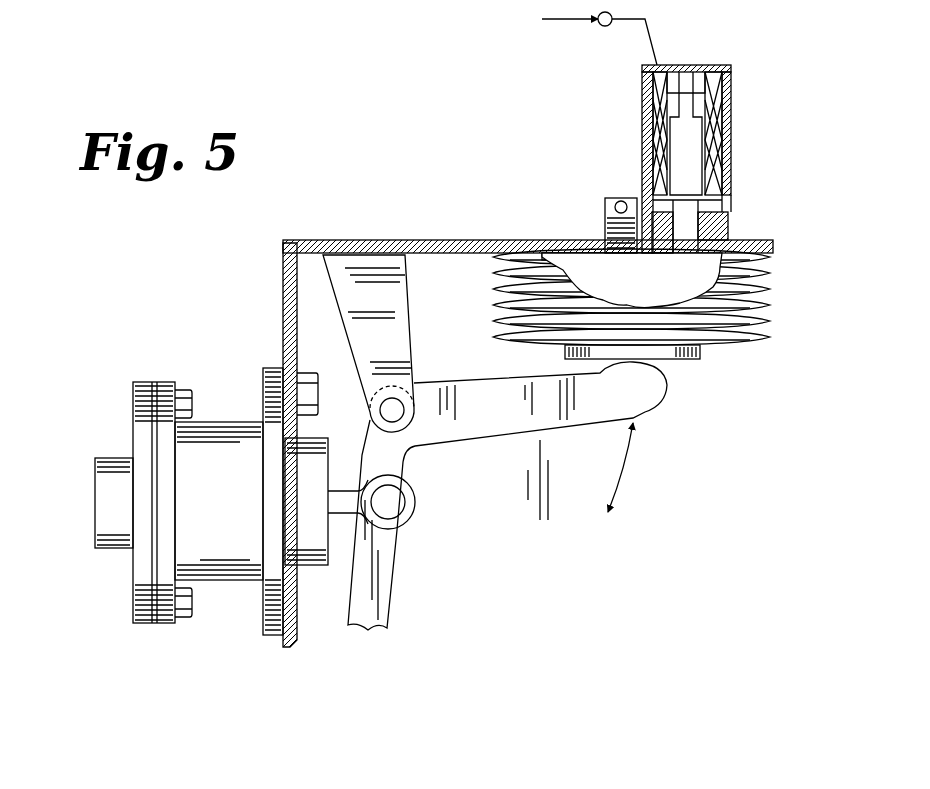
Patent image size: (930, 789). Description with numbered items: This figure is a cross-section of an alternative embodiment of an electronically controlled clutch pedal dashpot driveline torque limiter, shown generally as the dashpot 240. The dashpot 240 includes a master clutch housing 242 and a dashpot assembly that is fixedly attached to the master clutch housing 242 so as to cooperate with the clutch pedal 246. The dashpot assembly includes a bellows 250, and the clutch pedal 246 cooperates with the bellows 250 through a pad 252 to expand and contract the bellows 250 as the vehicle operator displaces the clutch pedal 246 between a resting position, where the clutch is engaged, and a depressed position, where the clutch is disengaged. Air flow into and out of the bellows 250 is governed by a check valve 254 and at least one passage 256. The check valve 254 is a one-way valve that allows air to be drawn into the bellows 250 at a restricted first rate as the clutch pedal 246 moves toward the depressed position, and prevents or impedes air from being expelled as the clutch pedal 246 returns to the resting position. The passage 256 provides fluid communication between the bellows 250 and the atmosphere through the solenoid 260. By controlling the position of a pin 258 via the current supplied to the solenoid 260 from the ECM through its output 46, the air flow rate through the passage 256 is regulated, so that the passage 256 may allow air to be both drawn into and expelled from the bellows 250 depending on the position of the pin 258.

The output 46 is at (552, 37).
The dashpot 240 is at (92, 336).
The master clutch housing 242 is at (223, 427).
The clutch pedal 246 is at (545, 415).
The bellows 250 is at (753, 342).
The pad 252 is at (690, 358).
The check valve 254 is at (608, 217).
The passage 256 is at (767, 310).
The pin 258 is at (683, 93).
The solenoid 260 is at (732, 148).